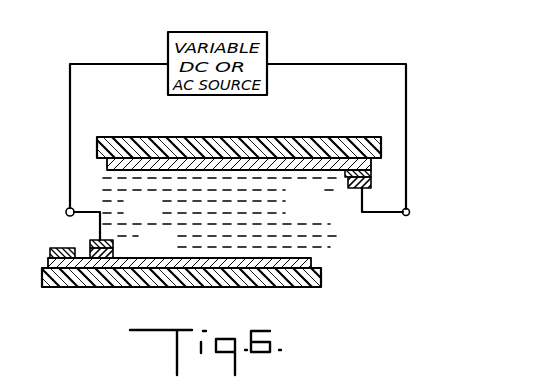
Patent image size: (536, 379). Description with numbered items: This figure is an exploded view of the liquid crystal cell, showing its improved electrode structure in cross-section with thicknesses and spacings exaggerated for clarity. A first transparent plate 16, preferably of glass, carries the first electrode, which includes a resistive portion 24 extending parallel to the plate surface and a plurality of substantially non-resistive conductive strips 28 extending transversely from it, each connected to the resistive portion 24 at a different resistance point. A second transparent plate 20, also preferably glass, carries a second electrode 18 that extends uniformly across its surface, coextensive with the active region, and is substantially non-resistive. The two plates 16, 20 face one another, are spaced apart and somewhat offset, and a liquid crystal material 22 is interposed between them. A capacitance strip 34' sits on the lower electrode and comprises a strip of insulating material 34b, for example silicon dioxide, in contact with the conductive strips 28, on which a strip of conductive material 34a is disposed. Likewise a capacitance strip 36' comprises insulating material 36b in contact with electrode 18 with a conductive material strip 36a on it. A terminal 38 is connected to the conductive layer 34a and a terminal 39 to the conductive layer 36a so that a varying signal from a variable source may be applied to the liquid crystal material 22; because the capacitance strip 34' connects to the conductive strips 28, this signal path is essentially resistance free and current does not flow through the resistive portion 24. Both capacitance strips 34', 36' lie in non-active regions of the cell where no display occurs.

The first transparent plate 16 is at (321, 284).
The second electrode 18 is at (207, 164).
The second transparent plate 20 is at (141, 137).
The liquid crystal material 22 is at (337, 227).
The resistive portion 24 is at (60, 249).
The conductive strips 28 is at (311, 262).
The capacitance strip 34' is at (51, 220).
The conductive material strip 34a is at (113, 243).
The insulating material strip 34b is at (113, 253).
The capacitance strip 36' is at (387, 193).
The conductive material strip 36a is at (350, 186).
The insulating material strip 36b is at (345, 173).
The terminal 38 is at (66, 210).
The terminal 39 is at (408, 215).